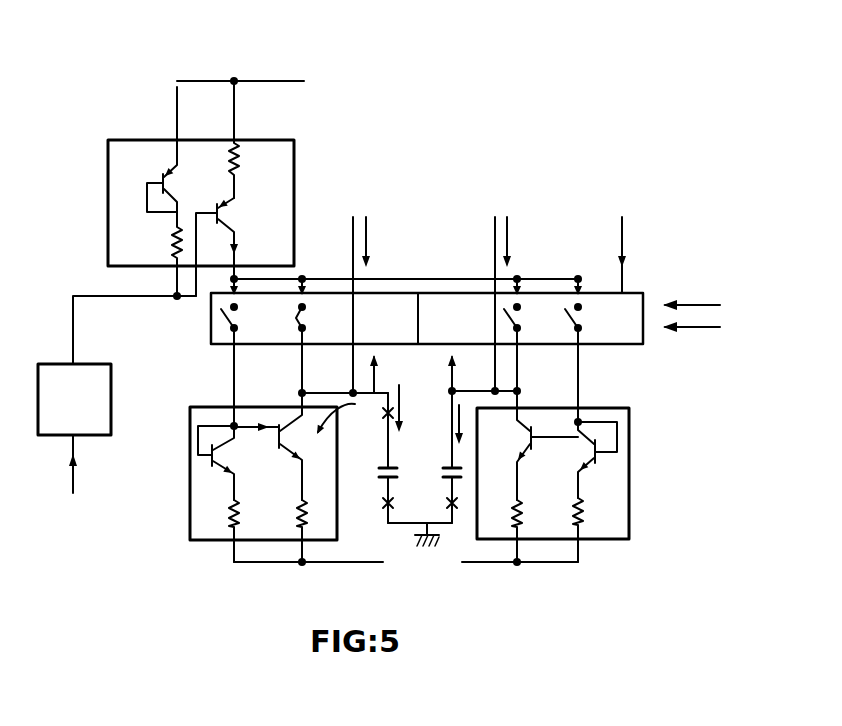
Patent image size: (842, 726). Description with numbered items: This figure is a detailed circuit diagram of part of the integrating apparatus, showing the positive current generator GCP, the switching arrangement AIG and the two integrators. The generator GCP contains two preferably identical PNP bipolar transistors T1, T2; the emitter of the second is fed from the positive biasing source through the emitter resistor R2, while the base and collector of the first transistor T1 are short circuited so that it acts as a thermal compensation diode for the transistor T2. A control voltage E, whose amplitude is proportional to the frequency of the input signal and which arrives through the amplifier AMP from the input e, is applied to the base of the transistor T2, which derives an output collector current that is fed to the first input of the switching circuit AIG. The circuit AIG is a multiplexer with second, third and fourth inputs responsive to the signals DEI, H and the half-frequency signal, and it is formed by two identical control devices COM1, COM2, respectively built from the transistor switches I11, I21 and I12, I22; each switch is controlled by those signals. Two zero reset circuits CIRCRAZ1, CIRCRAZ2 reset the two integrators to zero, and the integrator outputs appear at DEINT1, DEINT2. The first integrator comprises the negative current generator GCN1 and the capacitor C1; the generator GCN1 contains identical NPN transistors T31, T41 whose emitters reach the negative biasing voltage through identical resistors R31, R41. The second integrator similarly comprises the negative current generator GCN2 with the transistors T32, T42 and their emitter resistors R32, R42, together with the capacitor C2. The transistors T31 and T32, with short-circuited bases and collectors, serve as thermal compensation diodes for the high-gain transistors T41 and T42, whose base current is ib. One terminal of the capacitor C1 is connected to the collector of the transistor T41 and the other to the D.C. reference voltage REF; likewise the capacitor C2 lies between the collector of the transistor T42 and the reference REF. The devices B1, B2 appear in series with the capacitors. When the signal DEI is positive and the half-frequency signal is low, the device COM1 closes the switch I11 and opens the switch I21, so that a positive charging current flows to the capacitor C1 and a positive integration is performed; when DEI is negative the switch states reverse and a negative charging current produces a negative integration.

The positive current generator GCP is at (274, 140).
The emitter resistor R2 is at (249, 139).
The PNP bipolar transistor T1 is at (151, 193).
The PNP bipolar transistor T2 is at (231, 246).
The control voltage E is at (126, 330).
The amplifier AMP is at (74, 399).
The input signal e is at (82, 464).
The switching circuit AIG is at (436, 292).
The zero reset circuit CIRCRAZ1 is at (416, 299).
The zero reset circuit CIRCRAZ2 is at (555, 298).
The control signal DEI is at (644, 249).
The switch I21 is at (242, 364).
The switch I11 is at (314, 344).
The switch I12 is at (525, 347).
The switch I22 is at (587, 323).
The control device COM1 is at (211, 323).
The control device COM2 is at (659, 346).
The control signal H is at (699, 330).
The integration output 1 DEINT1 is at (375, 375).
The integration output 2 DEINT2 is at (489, 374).
The zener diode B1 is at (377, 430).
The capacitive integrating member C1 is at (398, 485).
The zener diode B2 is at (371, 505).
The capacitive integrating member C2 is at (441, 457).
The base current ib is at (256, 419).
The D.C. reference voltage REF is at (415, 545).
The negative current generator GCN1 is at (190, 508).
The NPN bipolar transistor T31 is at (226, 461).
The NPN bipolar transistor T41 is at (305, 446).
The emitter resistor R31 is at (251, 531).
The emitter resistor R41 is at (318, 531).
The negative current generator GCN2 is at (630, 455).
The NPN bipolar transistor T42 is at (547, 445).
The NPN bipolar transistor T32 is at (600, 421).
The emitter resistor R32 is at (534, 531).
The emitter resistor R42 is at (595, 530).